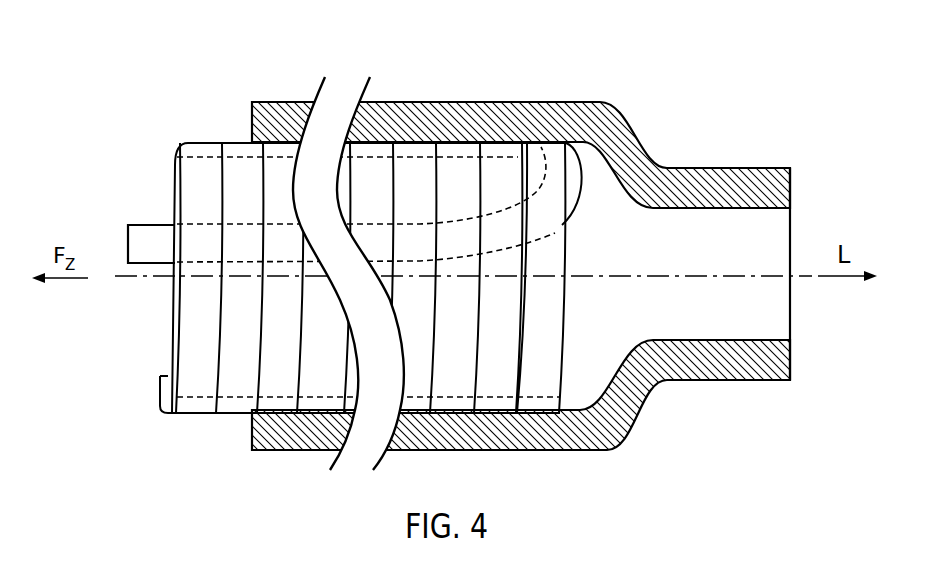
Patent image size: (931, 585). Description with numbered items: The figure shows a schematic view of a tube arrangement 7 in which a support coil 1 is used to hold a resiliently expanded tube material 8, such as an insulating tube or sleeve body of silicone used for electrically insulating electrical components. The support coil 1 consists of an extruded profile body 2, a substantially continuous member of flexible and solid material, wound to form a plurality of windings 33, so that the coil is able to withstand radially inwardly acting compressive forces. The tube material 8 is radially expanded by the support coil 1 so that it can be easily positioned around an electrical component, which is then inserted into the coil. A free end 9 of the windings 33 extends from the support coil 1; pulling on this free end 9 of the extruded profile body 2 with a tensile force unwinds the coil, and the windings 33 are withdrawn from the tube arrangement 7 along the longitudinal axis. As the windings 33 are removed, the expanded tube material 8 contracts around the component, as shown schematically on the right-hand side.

The support coil 1 is at (519, 259).
The extruded profile body 2 is at (345, 318).
The tube arrangement 7 is at (525, 247).
The tube material 8 is at (628, 147).
The free end 9 is at (140, 232).
The windings 33 is at (228, 407).